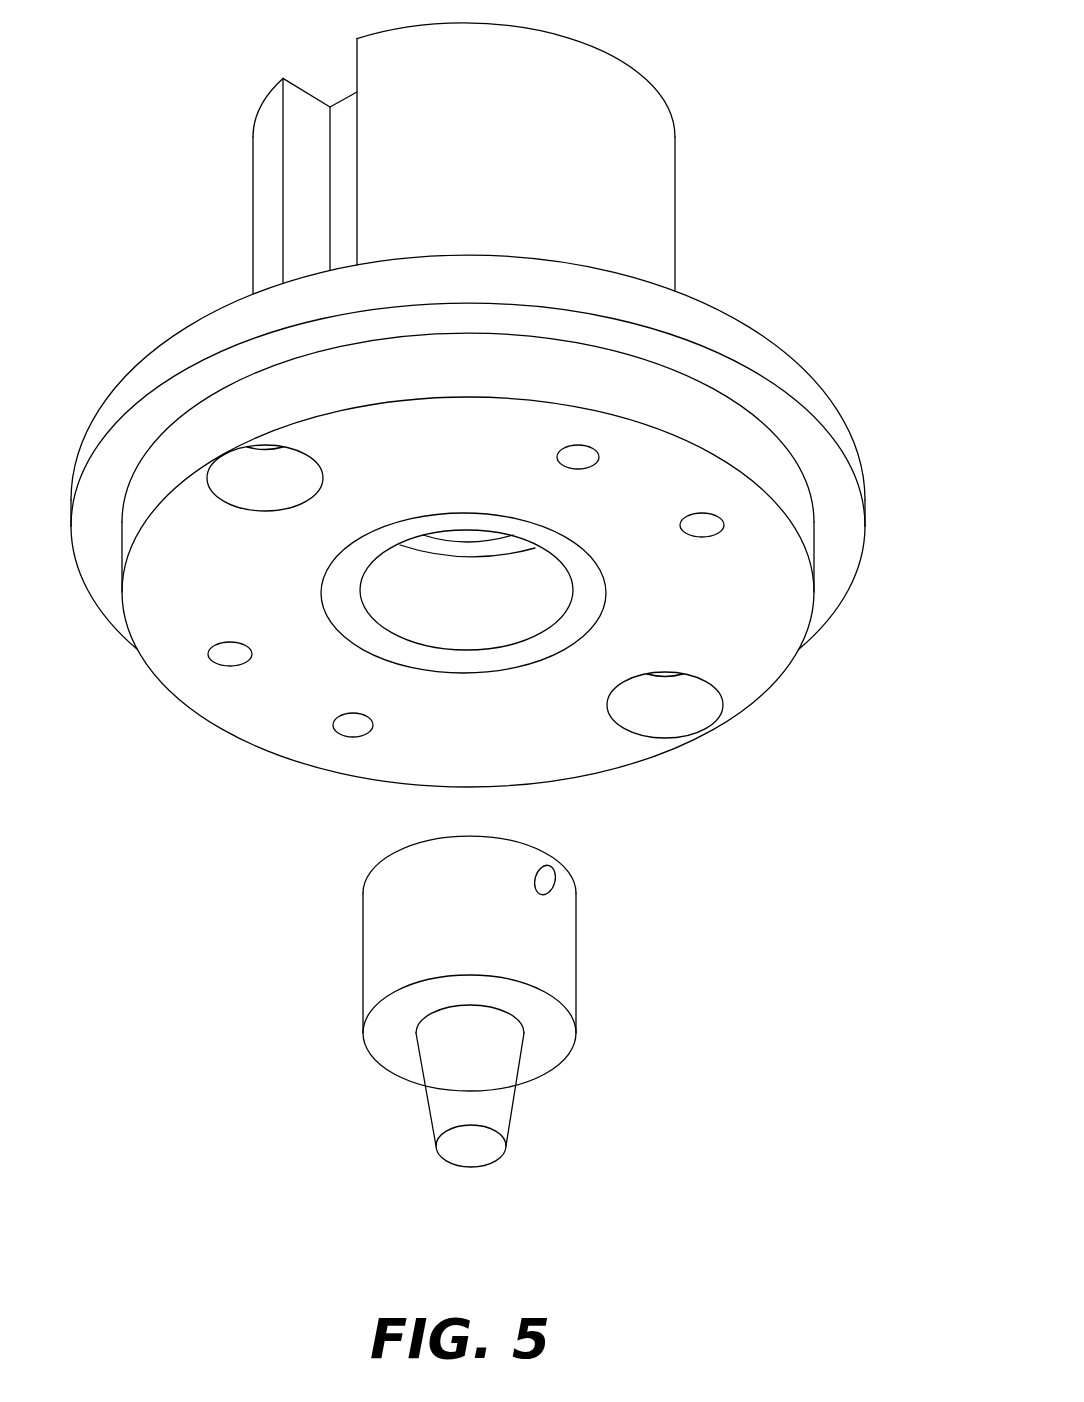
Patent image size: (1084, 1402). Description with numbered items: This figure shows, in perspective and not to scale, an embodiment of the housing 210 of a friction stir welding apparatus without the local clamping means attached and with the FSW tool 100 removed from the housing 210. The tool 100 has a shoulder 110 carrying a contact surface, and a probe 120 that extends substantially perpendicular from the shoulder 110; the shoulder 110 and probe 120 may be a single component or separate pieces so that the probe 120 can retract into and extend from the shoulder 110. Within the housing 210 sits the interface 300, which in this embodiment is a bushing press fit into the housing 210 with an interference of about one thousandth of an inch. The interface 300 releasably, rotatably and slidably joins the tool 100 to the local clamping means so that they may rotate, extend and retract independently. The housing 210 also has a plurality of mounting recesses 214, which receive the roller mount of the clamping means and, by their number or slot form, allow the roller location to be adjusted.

The FSW tool 100 is at (575, 914).
The shoulder 110 is at (572, 1043).
The probe 120 is at (432, 1122).
The housing 210 is at (640, 758).
The mounting recesses 214 is at (597, 455).
The interface 300 is at (572, 568).